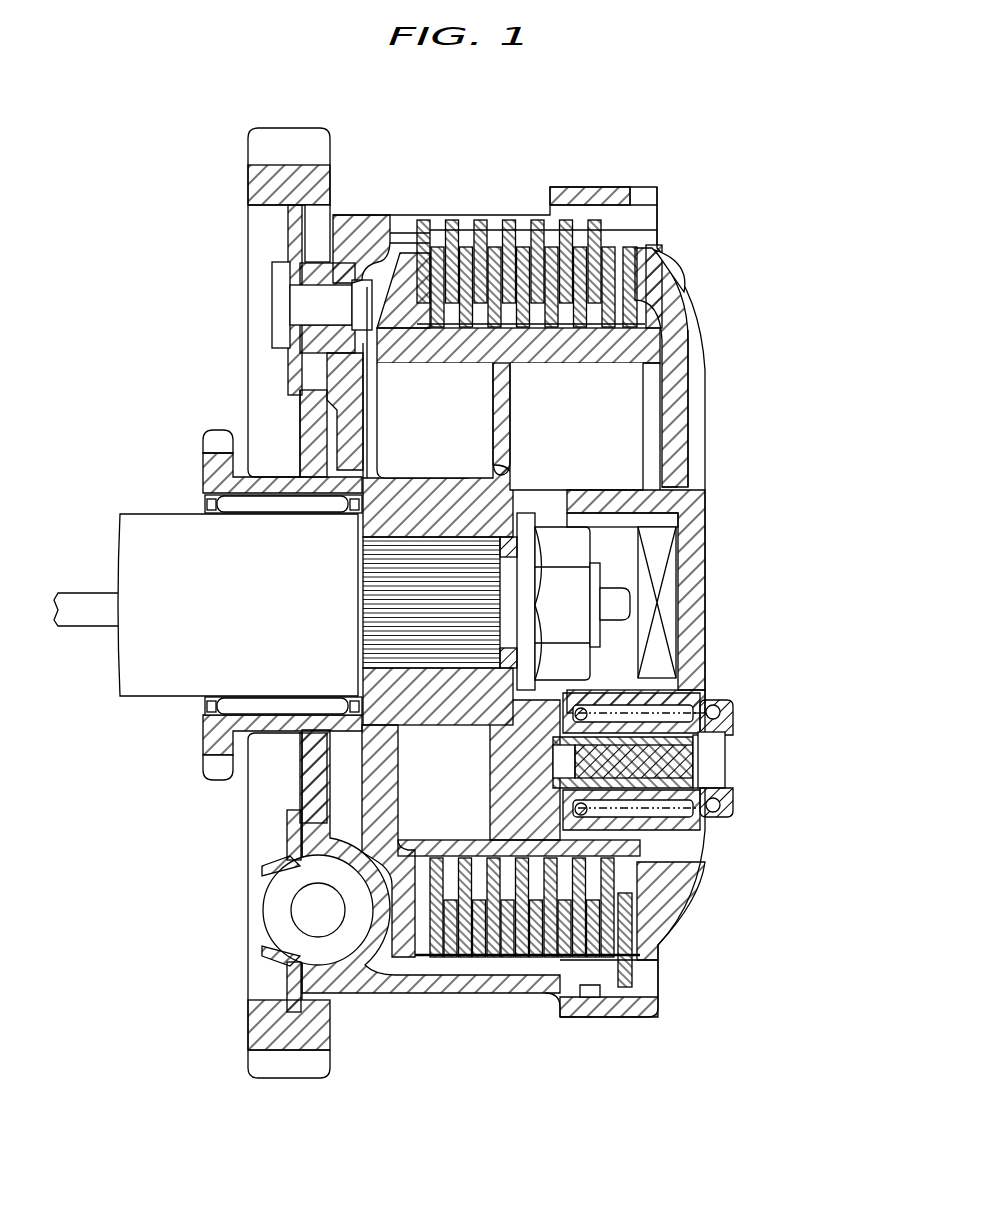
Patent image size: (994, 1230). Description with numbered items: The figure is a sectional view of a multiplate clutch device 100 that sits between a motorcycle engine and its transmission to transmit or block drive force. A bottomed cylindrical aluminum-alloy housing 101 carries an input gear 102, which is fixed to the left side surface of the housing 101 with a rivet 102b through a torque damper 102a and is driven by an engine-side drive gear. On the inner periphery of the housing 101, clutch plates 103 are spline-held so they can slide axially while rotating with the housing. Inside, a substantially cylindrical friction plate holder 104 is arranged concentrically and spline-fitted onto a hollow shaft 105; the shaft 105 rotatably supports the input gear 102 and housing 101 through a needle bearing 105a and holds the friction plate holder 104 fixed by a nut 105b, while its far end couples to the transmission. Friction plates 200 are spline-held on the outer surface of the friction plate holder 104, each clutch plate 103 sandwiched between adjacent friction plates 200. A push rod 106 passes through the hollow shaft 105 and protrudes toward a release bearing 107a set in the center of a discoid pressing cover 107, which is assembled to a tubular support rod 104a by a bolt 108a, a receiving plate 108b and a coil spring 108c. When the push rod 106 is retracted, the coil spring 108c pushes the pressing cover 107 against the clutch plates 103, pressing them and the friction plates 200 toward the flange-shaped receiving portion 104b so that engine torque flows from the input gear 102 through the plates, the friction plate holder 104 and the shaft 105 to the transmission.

The multiplate clutch device 100 is at (584, 142).
The housing 101 is at (416, 994).
The input gear 102 is at (283, 127).
The torque damper 102a is at (263, 912).
The rivet 102b is at (272, 300).
The clutch plate 103 is at (509, 220).
The friction plate holder 104 is at (578, 364).
The tubular support rod 104a is at (495, 750).
The receiving portion 104b is at (386, 266).
The shaft 105 is at (143, 513).
The needle bearing 105a is at (205, 714).
The nut 105b is at (548, 526).
The push rod 106 is at (606, 586).
The pressing cover 107 is at (688, 405).
The release bearing 107a is at (678, 580).
The bolt 108a is at (735, 762).
The receiving plate 108b is at (728, 808).
The coil spring 108c is at (718, 700).
The friction plate 200 is at (440, 240).